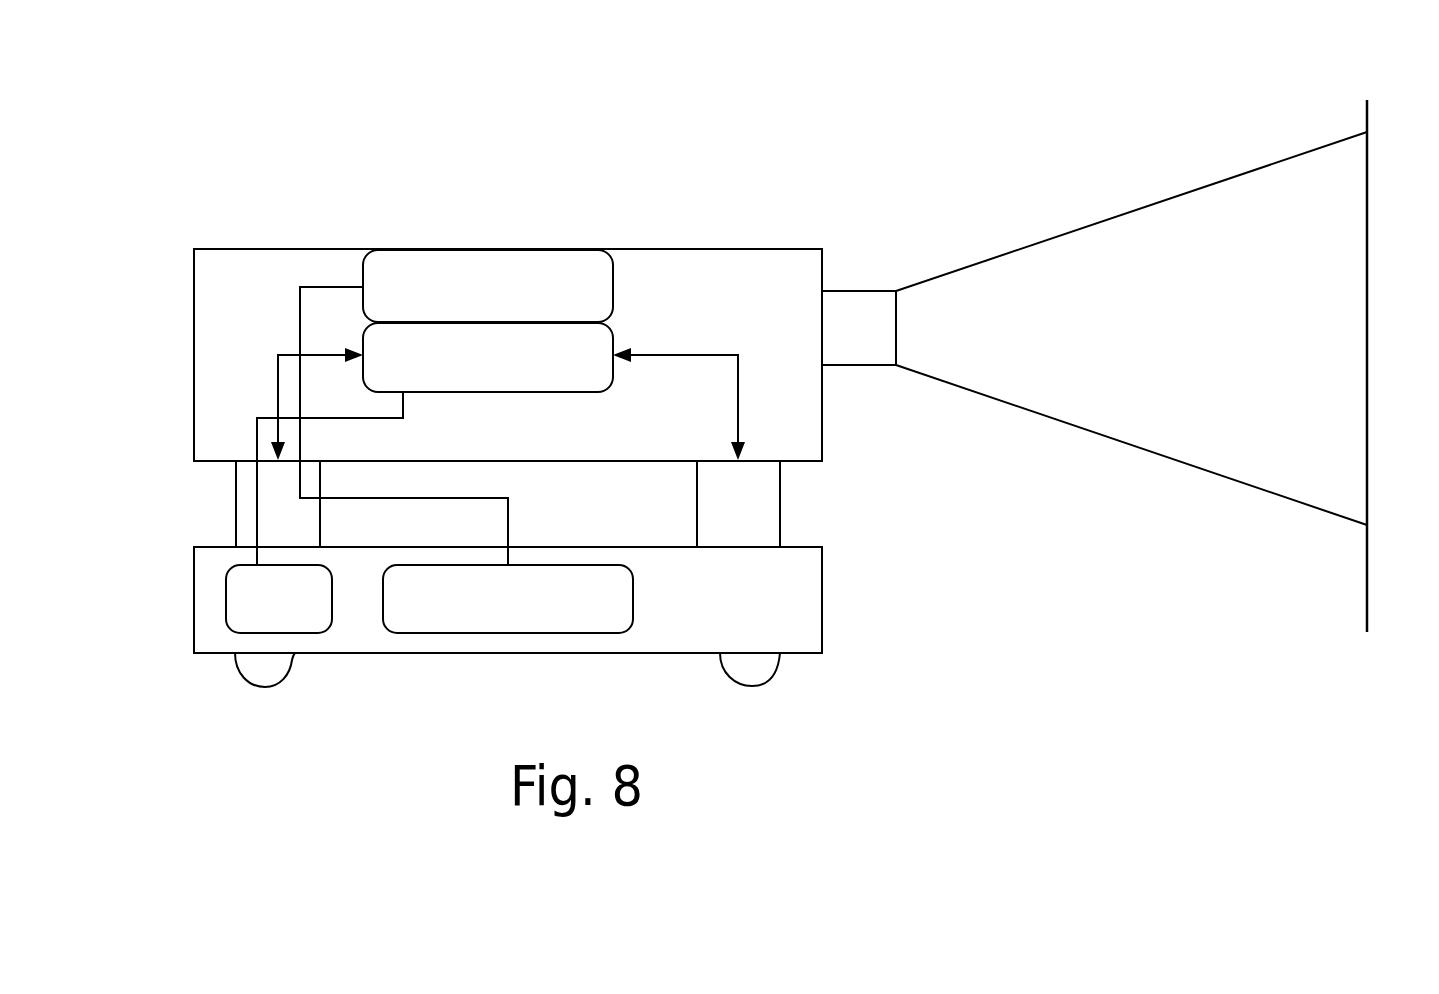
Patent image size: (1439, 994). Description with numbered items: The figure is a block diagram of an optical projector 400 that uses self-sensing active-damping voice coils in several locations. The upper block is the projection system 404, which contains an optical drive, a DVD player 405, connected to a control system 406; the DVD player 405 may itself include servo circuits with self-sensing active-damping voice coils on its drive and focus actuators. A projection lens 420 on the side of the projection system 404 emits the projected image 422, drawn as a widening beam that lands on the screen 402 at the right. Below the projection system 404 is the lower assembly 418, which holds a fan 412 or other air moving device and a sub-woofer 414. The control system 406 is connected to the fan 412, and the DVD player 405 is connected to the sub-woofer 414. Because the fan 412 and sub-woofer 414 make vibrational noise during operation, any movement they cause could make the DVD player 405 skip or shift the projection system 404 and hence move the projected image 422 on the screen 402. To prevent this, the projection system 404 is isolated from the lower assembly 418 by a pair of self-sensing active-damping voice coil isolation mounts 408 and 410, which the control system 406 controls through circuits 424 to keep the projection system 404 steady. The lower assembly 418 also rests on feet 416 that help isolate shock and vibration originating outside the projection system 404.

The optical projector 400 is at (782, 146).
The screen 402 is at (1367, 423).
The projection system 404 is at (342, 249).
The DVD player 405 is at (613, 287).
The control system 406 is at (572, 392).
The self-sensing active-damping voice coil isolation mount 408 is at (236, 510).
The self-sensing active-damping voice coil isolation mount 410 is at (780, 520).
The fan 412 is at (226, 598).
The sub-woofer 414 is at (635, 598).
The feet 416 is at (780, 655).
The lower assembly 418 is at (823, 625).
The projection lens 420 is at (860, 291).
The projected image 422 is at (1104, 453).
The circuits 424 is at (278, 380).